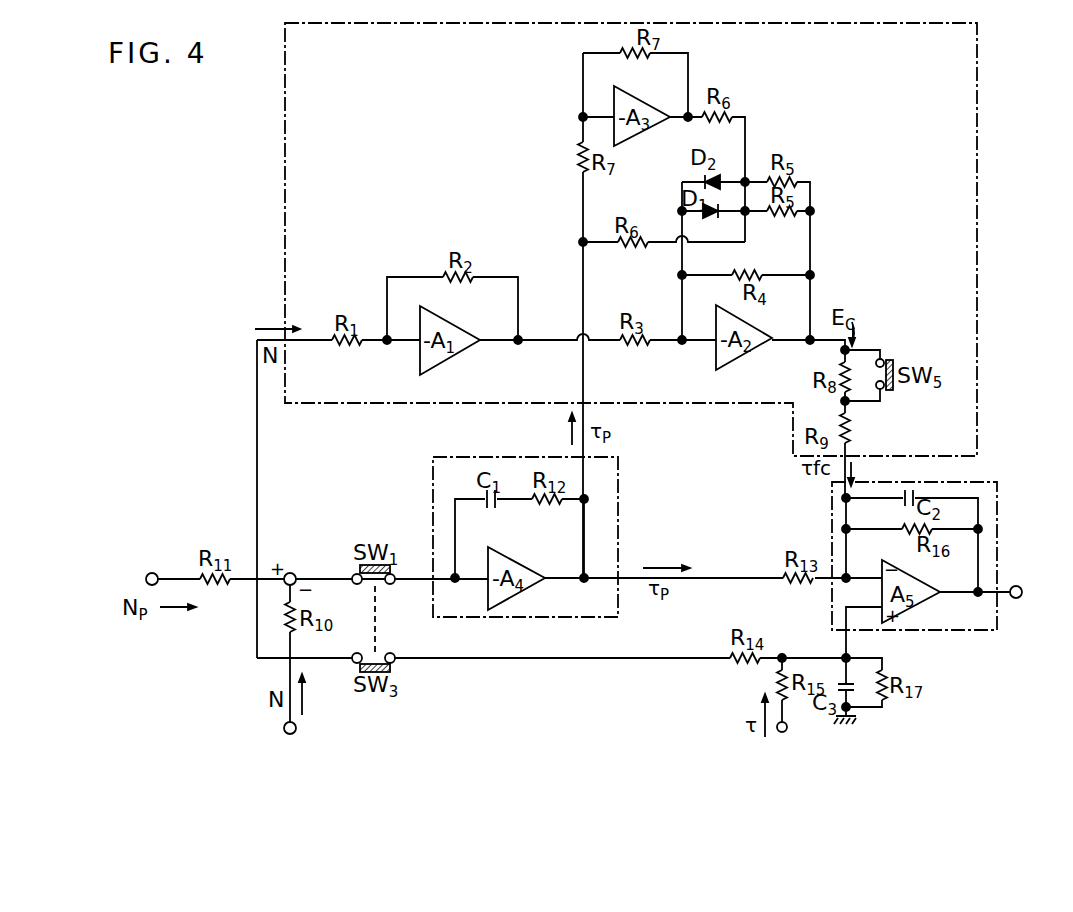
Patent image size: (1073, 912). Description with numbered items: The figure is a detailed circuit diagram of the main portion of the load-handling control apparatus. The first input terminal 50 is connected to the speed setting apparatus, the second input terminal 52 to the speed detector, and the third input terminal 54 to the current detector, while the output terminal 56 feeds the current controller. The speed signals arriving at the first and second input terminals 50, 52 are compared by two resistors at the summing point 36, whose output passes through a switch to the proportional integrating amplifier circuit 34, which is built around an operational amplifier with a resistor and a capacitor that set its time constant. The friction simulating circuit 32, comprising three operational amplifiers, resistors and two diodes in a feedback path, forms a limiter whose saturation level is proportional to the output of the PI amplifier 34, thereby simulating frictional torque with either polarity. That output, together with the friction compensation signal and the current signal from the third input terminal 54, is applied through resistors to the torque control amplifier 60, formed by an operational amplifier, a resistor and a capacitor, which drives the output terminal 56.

The friction simulating circuit 32 is at (976, 145).
The proportional integrating amplifier circuit 34 is at (646, 499).
The summing point 36 is at (308, 578).
The input terminal 50 is at (160, 570).
The input terminal 52 is at (296, 732).
The input terminal 54 is at (787, 732).
The output terminal 56 is at (1034, 586).
The torque control amplifier 60 is at (997, 521).